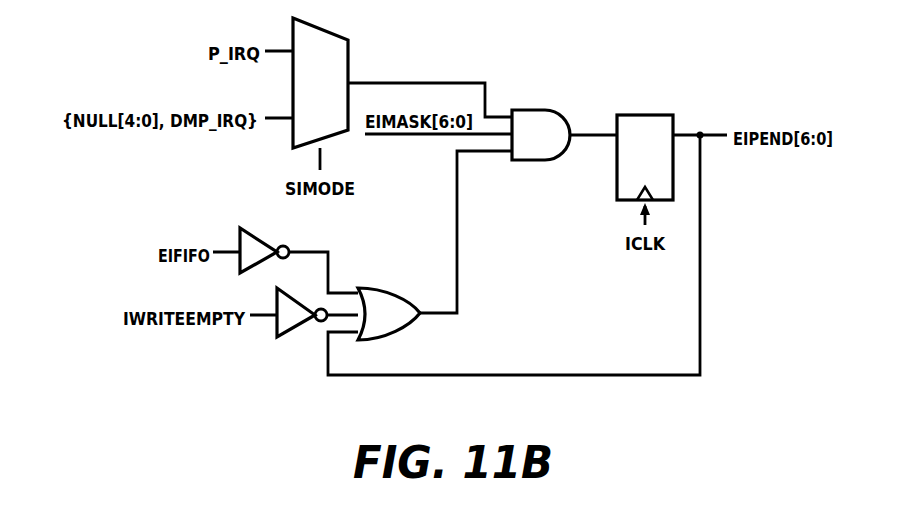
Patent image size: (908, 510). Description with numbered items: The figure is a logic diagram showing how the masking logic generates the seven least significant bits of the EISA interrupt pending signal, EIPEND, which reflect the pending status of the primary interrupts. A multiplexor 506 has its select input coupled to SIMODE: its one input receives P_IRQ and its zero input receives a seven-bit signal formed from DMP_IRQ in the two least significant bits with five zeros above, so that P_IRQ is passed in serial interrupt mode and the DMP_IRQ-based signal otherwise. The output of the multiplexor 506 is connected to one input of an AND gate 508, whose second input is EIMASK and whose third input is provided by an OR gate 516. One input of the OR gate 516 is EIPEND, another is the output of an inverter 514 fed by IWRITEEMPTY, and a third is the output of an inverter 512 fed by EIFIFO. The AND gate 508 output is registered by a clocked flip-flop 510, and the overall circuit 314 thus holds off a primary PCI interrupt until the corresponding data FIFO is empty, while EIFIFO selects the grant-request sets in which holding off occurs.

The multiplexor 506 is at (322, 28).
The AND gate 508 is at (545, 110).
The D flip-flop 510 is at (650, 115).
The inverter 512 is at (254, 236).
The inverter 514 is at (290, 336).
The OR gate 516 is at (384, 340).
The interrupt pending logic circuit 314 is at (764, 393).